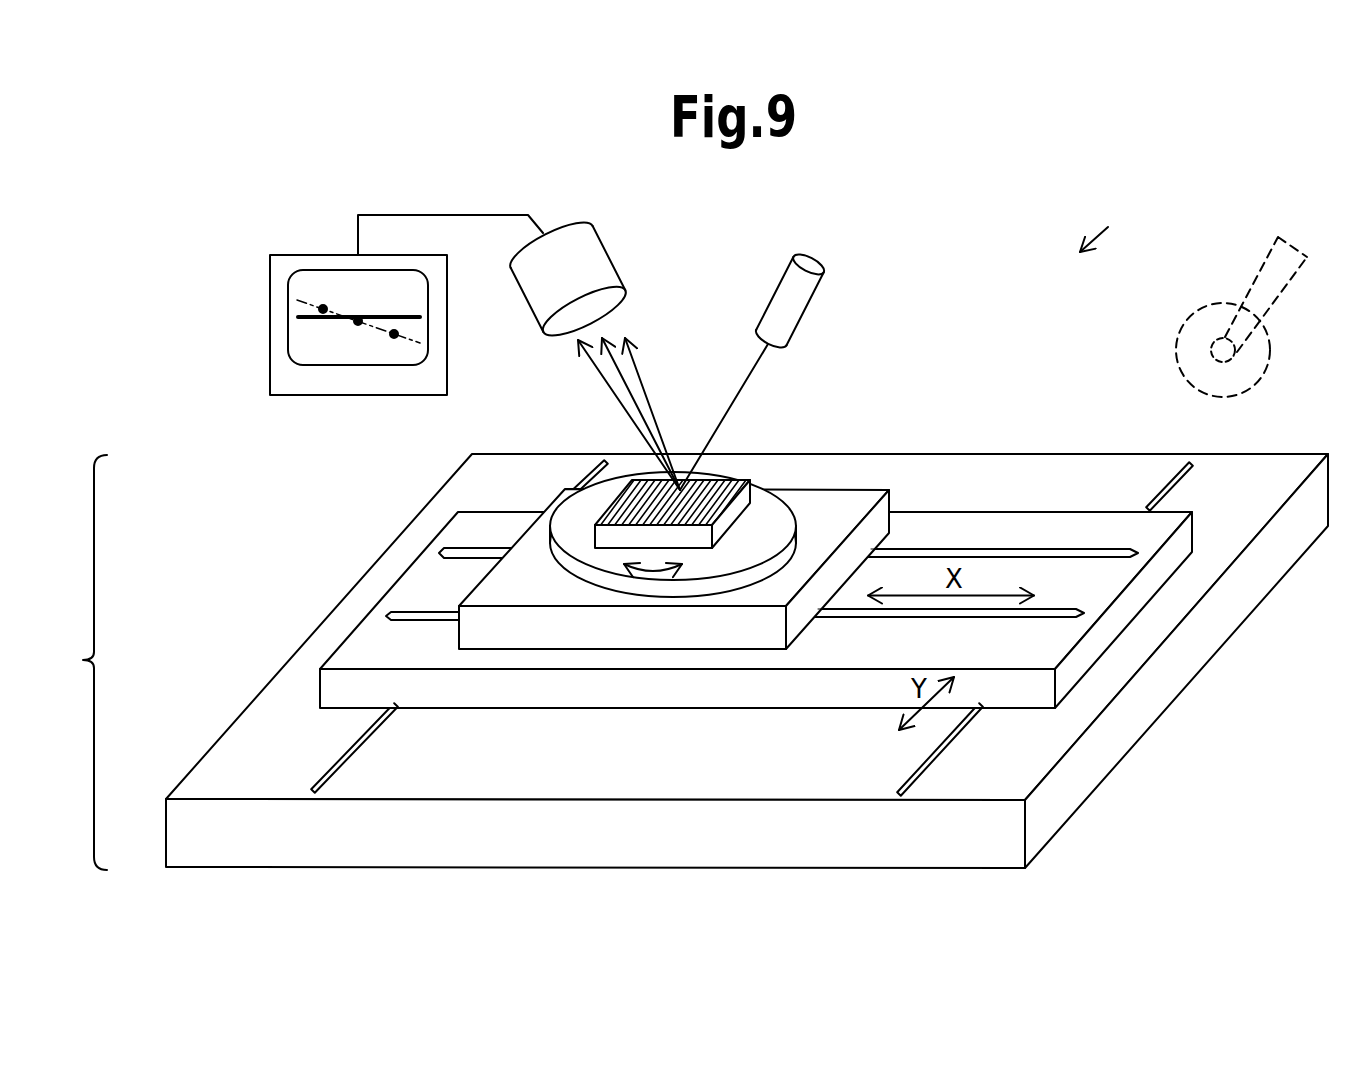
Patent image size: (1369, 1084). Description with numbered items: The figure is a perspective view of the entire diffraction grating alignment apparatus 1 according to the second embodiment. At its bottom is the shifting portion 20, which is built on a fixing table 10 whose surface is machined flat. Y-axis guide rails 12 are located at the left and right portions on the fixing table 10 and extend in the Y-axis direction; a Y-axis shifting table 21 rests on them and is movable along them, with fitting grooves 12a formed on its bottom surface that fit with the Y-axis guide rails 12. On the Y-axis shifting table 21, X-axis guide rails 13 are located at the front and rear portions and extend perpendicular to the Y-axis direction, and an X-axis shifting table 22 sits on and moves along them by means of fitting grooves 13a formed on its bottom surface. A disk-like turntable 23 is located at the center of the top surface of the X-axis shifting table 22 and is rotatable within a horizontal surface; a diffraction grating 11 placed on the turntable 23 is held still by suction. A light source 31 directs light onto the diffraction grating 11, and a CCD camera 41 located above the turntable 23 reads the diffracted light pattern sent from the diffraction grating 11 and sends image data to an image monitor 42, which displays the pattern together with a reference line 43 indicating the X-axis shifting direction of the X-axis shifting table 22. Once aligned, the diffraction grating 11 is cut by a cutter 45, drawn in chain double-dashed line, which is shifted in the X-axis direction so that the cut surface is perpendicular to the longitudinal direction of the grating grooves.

The diffraction grating alignment apparatus 1 is at (1120, 215).
The fixing table 10 is at (304, 857).
The diffraction grating 11 is at (727, 517).
The Y-axis guide rails 12 is at (341, 780).
The fitting grooves 12a is at (397, 708).
The X-axis guide rails 13 is at (1045, 550).
The fitting grooves 13a is at (869, 554).
The shifting portion 20 is at (68, 675).
The Y-axis shifting table 21 is at (549, 696).
The X-axis shifting table 22 is at (887, 504).
The turntable 23 is at (576, 569).
The light source 31 is at (808, 265).
The CCD camera 41 is at (598, 260).
The image monitor 42 is at (278, 372).
The reference line 43 is at (378, 313).
The cutter 45 is at (1253, 377).